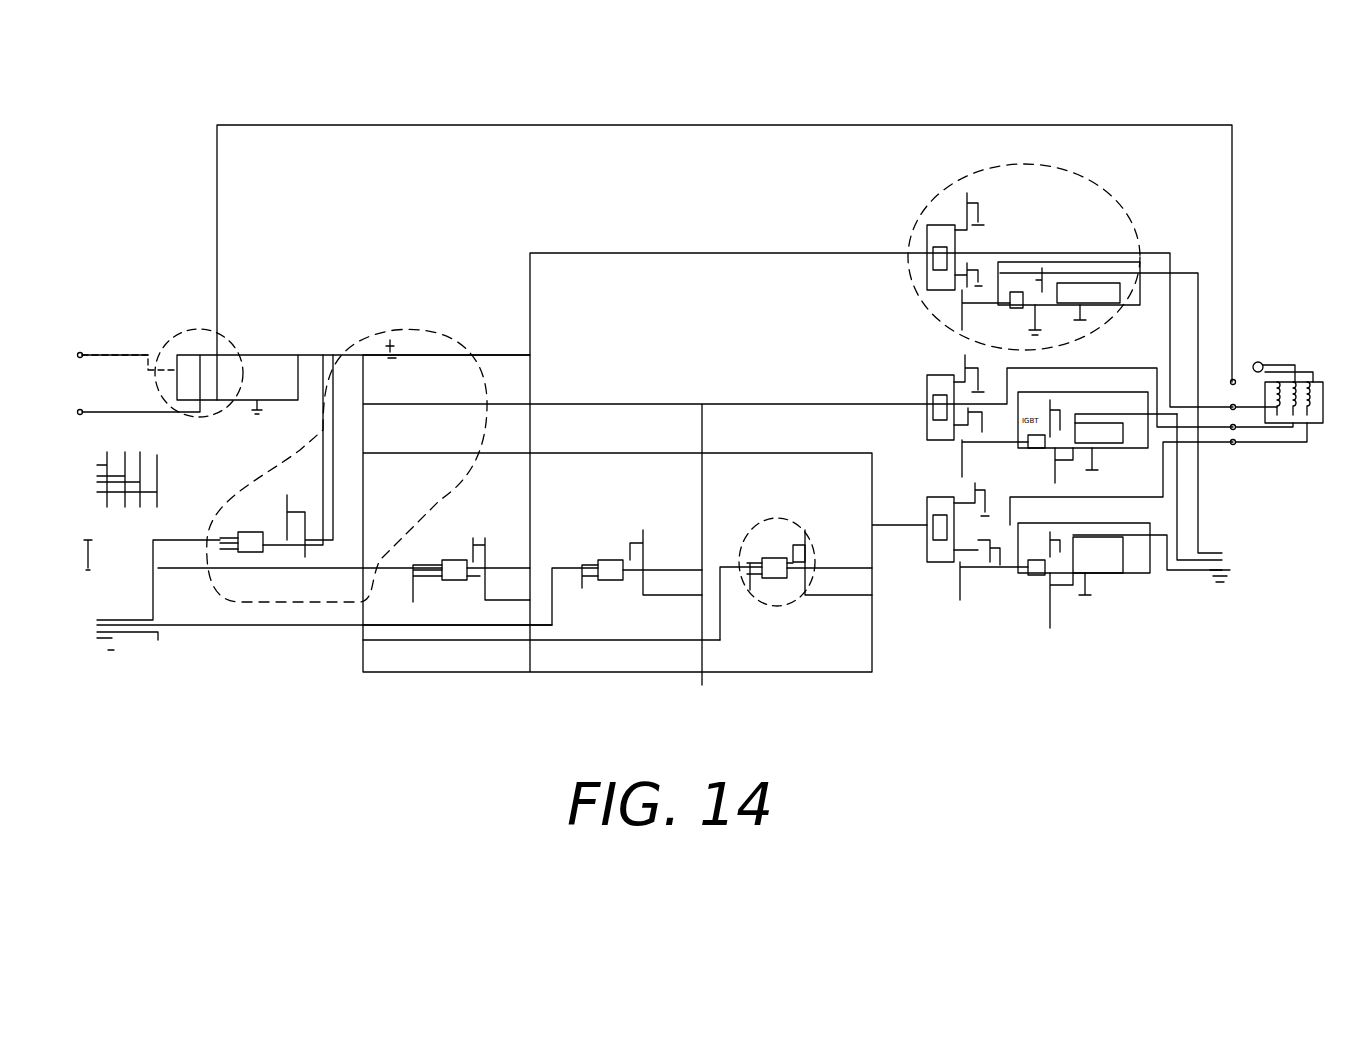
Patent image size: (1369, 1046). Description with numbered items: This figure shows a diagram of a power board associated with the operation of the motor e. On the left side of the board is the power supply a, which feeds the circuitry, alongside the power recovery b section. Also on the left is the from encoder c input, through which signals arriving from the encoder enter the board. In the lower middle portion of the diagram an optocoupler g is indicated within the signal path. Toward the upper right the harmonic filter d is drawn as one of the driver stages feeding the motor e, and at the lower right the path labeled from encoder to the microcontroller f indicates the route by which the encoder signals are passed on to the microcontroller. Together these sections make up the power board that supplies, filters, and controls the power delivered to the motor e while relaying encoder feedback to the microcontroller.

The power supply a is at (300, 349).
The power recovery b is at (347, 433).
The from encoder c is at (313, 596).
The harmonic filter d is at (1112, 176).
The motor e is at (1297, 425).
The from encoder to the microcontroller f is at (1111, 588).
The optocoupler g is at (777, 606).